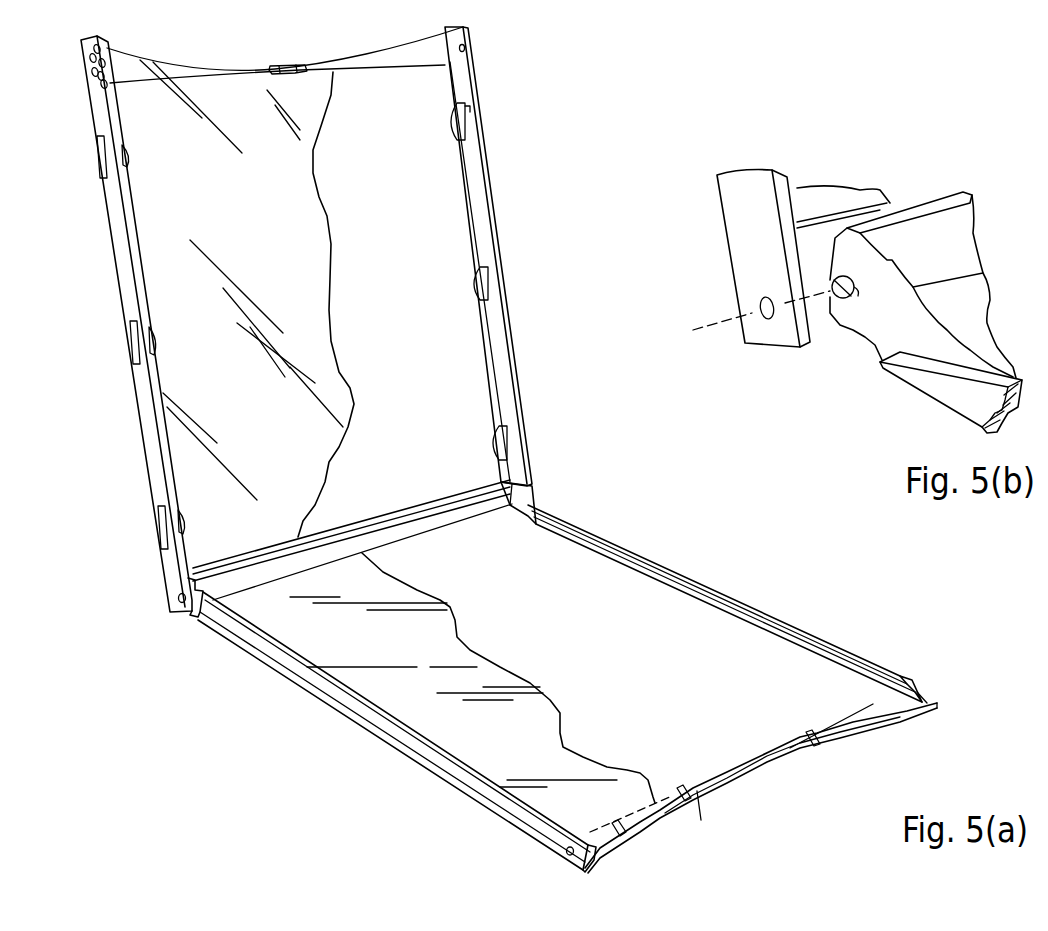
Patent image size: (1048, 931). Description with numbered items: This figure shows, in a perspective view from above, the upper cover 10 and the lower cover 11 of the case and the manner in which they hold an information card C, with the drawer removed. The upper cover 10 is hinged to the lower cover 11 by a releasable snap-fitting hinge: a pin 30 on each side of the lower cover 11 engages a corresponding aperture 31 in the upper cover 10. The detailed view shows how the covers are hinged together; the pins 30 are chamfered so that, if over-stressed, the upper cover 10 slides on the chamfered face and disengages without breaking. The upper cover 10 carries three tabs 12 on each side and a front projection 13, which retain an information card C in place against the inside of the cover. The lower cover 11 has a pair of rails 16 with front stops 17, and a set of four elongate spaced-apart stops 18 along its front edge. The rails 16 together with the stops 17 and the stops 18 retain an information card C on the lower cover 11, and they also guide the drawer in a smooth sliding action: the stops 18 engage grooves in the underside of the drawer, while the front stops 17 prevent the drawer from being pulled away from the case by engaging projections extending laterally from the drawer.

In FIG. 5A, the upper cover 10 is at (86, 152).
In FIG. 5A, the lower cover 11 is at (820, 632).
In FIG. 5A, the tabs 12 is at (466, 123).
In FIG. 5A, the front projection 13 is at (291, 65).
In FIG. 5A, the rails 16 is at (708, 590).
In FIG. 5A, the front stops 17 is at (925, 690).
In FIG. 5A, the elongate spaced-apart stops 18 is at (636, 826).
In FIG. 5B, the pin 30 is at (858, 308).
In FIG. 5A, the apertures 31 is at (180, 600).
In FIG. 5B, the apertures 31 is at (760, 300).
In FIG. 5A, the information card C is at (458, 356).